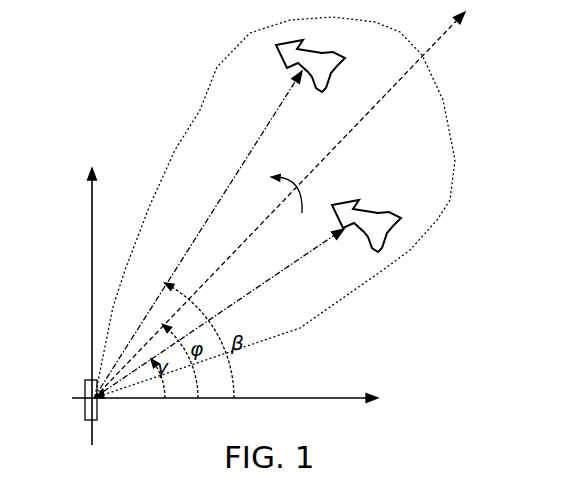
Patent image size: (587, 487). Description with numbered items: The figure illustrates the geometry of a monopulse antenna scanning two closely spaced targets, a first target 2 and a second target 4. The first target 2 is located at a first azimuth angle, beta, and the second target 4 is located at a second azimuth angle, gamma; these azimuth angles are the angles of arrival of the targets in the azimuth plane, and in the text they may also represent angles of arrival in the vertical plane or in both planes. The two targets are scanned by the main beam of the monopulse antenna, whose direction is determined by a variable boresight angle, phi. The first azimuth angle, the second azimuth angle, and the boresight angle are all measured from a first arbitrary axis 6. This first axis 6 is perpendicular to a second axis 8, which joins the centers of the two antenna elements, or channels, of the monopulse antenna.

The first target 2 is at (340, 53).
The second target 4 is at (355, 200).
The first arbitrary axis 6 is at (262, 398).
The second axis 8 is at (89, 257).